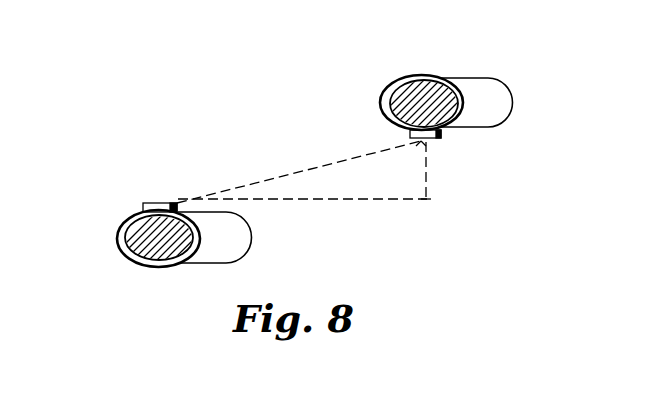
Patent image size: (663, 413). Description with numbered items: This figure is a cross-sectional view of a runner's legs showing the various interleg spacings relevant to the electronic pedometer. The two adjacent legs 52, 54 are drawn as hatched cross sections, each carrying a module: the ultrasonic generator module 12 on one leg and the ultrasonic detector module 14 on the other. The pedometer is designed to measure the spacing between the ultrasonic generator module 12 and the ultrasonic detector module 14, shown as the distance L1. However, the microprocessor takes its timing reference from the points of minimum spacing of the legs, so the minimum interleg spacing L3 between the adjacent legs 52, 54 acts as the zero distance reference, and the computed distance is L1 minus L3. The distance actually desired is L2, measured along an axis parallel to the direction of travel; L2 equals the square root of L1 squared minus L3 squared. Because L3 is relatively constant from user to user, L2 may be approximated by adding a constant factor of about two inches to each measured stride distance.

The ultrasonic generator module 12 is at (457, 97).
The ultrasonic detector module 14 is at (154, 201).
The leg 52 is at (134, 262).
The leg 54 is at (424, 82).
The distance between generator module and detector module L1 is at (301, 165).
The distance along axis parallel to direction of travel L2 is at (329, 201).
The minimum interleg spacing L3 is at (431, 171).